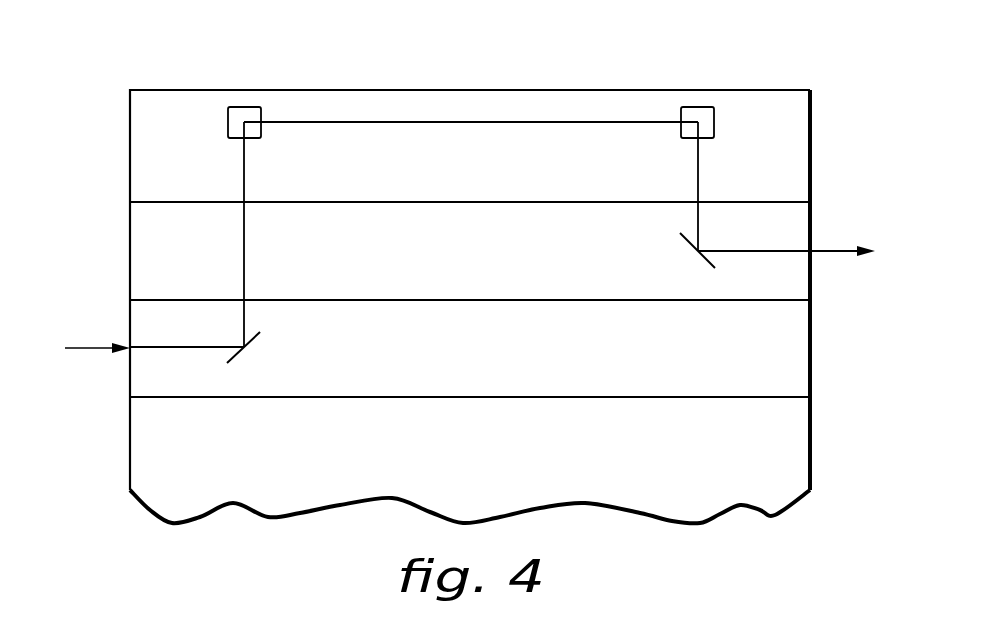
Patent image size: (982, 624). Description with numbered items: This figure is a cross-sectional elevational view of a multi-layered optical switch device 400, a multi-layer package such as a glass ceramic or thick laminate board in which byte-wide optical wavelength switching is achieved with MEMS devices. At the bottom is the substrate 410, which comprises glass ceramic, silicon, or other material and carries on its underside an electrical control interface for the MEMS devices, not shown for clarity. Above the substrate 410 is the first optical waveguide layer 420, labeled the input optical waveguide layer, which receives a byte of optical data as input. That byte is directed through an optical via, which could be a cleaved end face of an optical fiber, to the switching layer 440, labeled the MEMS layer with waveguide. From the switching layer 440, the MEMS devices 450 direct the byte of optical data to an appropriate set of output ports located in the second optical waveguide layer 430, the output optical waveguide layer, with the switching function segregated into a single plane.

The optical switch device 400 is at (213, 28).
The substrate 410 is at (694, 468).
The first optical waveguide layer 420 is at (765, 365).
The second optical waveguide layer 430 is at (213, 262).
The switching layer 440 is at (213, 167).
The MEMS devices 450 is at (243, 110).